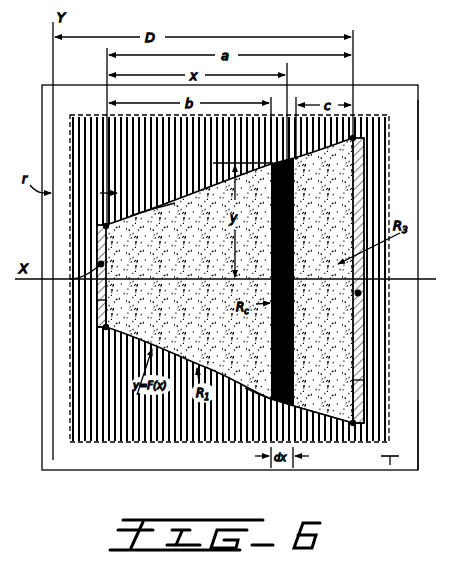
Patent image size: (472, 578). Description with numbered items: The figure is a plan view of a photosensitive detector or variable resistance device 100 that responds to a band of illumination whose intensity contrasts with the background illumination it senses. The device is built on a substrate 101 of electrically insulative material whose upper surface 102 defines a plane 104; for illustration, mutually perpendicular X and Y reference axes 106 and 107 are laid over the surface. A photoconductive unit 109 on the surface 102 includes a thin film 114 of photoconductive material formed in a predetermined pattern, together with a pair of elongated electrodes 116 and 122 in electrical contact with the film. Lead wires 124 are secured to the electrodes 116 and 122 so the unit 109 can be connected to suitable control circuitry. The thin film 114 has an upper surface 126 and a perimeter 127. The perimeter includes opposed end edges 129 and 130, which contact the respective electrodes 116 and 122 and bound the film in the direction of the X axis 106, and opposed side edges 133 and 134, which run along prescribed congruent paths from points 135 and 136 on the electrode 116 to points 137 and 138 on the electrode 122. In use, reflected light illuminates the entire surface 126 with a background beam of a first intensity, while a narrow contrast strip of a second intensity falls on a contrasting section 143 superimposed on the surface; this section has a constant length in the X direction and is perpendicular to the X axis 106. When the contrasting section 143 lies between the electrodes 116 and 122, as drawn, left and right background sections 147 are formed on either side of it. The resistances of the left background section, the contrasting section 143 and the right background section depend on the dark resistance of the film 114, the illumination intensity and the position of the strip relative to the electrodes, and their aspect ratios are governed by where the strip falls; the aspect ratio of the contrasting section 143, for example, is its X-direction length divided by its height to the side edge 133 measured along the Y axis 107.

The variable resistance device 100 is at (422, 88).
The substrate 101 is at (419, 124).
The upper surface 102 is at (409, 428).
The plane 104 is at (391, 466).
The X reference axis 106 is at (40, 285).
The Y reference axis 107 is at (53, 420).
The photoconductive unit 109 is at (243, 390).
The thin film 114 is at (316, 402).
The electrode 116 is at (108, 301).
The electrode 122 is at (352, 327).
The lead wires 124 is at (57, 284).
The upper surface 126 is at (191, 191).
The perimeter 127 is at (262, 396).
The end edge 129 is at (107, 318).
The end edge 130 is at (354, 384).
The side edge 133 is at (154, 213).
The side edge 134 is at (180, 356).
The point 135 is at (108, 228).
The point 136 is at (105, 331).
The point 137 is at (354, 136).
The point 138 is at (353, 428).
The contrasting section 143 is at (270, 342).
The background sections 147 is at (203, 300).